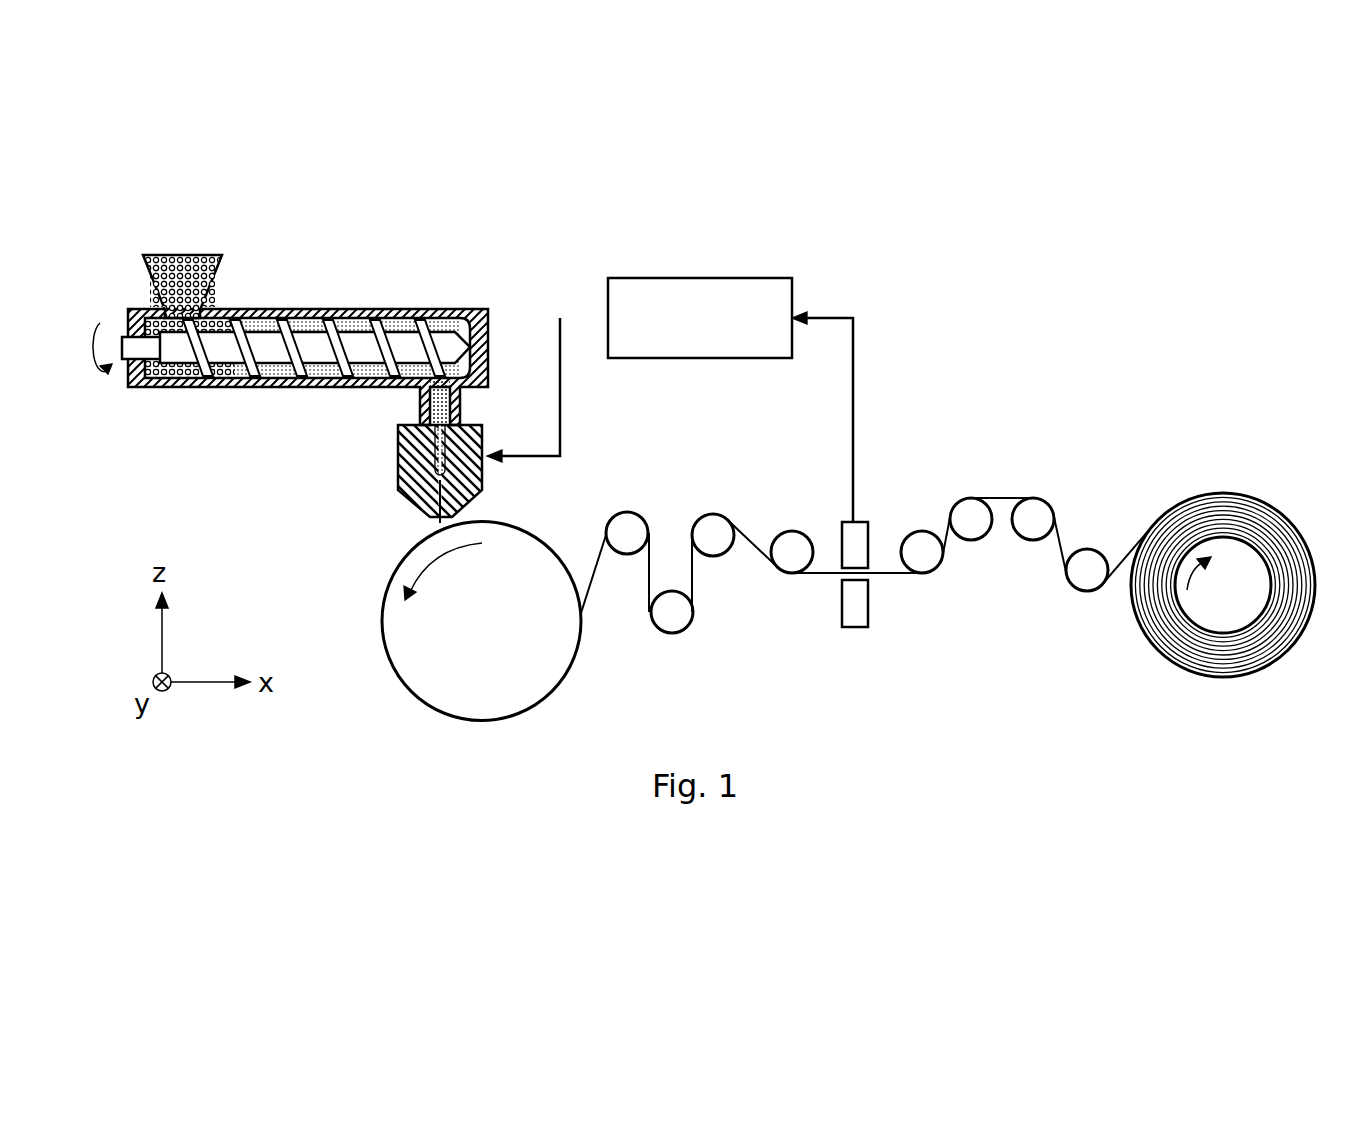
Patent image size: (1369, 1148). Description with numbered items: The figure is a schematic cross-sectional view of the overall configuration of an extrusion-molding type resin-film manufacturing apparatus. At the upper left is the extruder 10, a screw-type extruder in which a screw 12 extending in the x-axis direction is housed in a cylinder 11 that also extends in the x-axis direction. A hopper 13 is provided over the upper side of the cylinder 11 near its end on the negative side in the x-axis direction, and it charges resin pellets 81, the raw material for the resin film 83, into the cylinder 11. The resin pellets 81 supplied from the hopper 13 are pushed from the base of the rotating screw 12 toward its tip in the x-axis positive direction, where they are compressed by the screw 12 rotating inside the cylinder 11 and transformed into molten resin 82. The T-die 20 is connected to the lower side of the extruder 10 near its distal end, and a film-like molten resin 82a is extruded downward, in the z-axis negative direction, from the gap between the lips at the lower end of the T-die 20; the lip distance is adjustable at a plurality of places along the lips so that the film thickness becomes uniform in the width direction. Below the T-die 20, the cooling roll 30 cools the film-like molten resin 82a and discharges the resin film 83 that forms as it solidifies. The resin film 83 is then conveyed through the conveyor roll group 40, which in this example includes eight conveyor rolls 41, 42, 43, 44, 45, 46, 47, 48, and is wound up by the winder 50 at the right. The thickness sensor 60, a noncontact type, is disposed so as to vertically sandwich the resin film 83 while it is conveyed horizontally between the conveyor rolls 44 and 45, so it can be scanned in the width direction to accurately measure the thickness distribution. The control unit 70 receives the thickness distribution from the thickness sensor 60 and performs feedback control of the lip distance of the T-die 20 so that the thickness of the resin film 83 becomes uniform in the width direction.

The extruder 10 is at (352, 262).
The cylinder 11 is at (310, 307).
The screw 12 is at (392, 331).
The hopper 13 is at (225, 262).
The T-die 20 is at (398, 456).
The cooling roll 30 is at (383, 630).
The conveyor roll group 40 is at (1105, 690).
The conveyor roll 41 is at (627, 554).
The conveyor roll 42 is at (672, 633).
The conveyor roll 43 is at (713, 556).
The conveyor roll 44 is at (792, 573).
The conveyor roll 45 is at (922, 573).
The conveyor roll 46 is at (971, 540).
The conveyor roll 47 is at (1033, 540).
The conveyor roll 48 is at (1087, 591).
The winder 50 is at (1220, 544).
The thickness sensor 60 is at (858, 520).
The control unit 70 is at (728, 282).
The resin pellets 81 is at (178, 254).
The molten resin 82 is at (420, 414).
The film-like molten resin 82a is at (436, 524).
The resin film 83 is at (603, 548).